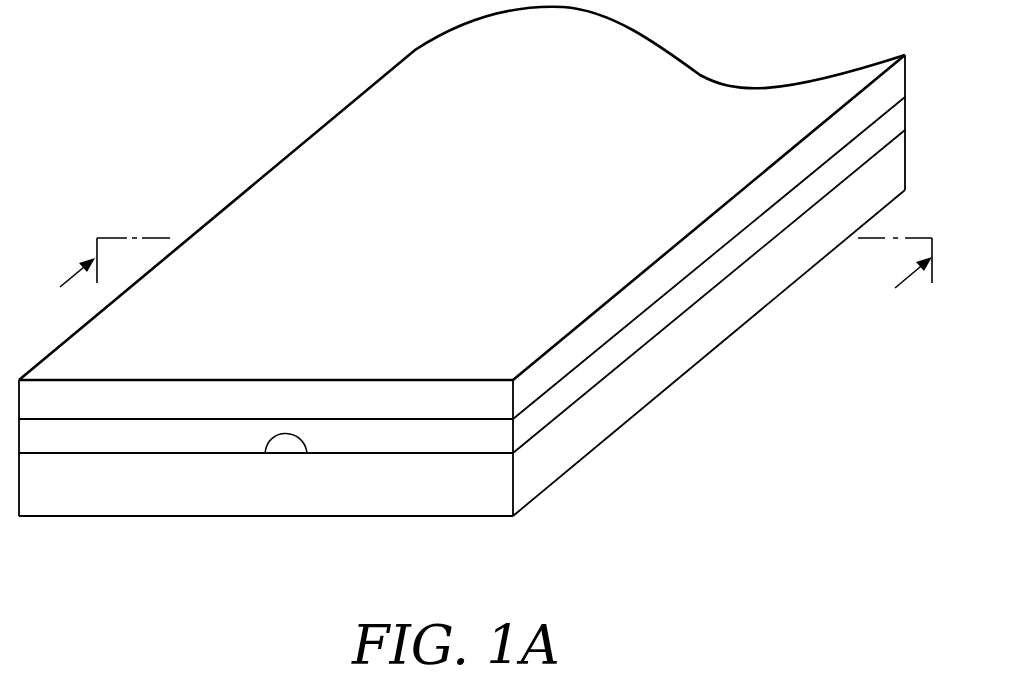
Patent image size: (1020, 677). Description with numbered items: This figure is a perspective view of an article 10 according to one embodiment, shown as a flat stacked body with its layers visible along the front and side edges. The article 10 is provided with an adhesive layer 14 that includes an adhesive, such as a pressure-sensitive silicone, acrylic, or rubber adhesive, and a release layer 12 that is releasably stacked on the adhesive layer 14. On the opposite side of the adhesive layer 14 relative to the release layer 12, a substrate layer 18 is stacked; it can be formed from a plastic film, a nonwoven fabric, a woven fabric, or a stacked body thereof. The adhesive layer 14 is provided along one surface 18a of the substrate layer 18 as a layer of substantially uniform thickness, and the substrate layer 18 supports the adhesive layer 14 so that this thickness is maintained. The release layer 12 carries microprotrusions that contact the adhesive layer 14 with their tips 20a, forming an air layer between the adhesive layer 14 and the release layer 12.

The article 10 is at (475, 300).
The release layer 12 is at (576, 439).
The adhesive layer 14 is at (462, 346).
The substrate layer 18 is at (462, 300).
The one surface of the substrate layer 18a is at (142, 419).
The tips of the microprotrusions 20a is at (265, 453).